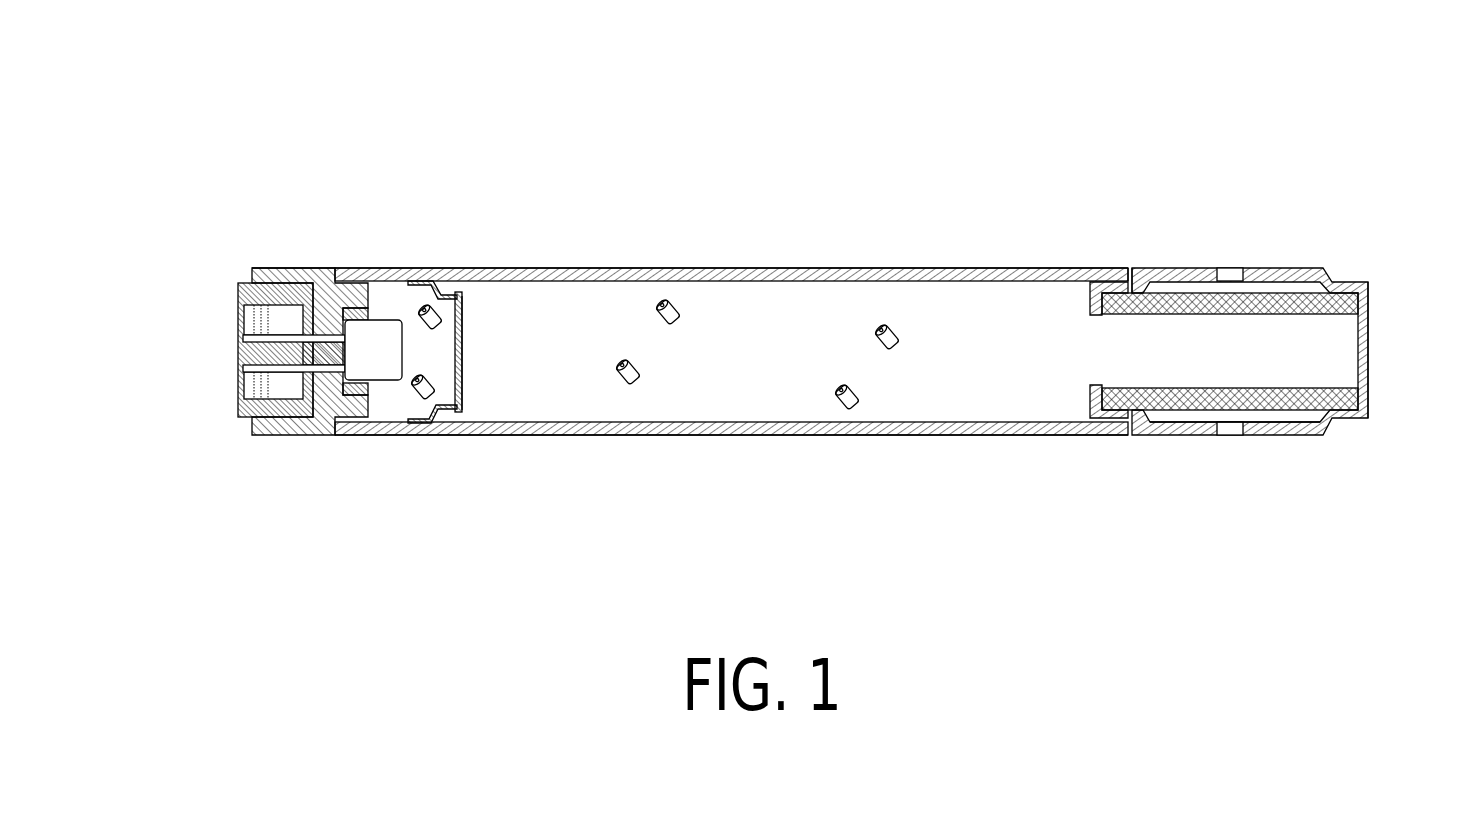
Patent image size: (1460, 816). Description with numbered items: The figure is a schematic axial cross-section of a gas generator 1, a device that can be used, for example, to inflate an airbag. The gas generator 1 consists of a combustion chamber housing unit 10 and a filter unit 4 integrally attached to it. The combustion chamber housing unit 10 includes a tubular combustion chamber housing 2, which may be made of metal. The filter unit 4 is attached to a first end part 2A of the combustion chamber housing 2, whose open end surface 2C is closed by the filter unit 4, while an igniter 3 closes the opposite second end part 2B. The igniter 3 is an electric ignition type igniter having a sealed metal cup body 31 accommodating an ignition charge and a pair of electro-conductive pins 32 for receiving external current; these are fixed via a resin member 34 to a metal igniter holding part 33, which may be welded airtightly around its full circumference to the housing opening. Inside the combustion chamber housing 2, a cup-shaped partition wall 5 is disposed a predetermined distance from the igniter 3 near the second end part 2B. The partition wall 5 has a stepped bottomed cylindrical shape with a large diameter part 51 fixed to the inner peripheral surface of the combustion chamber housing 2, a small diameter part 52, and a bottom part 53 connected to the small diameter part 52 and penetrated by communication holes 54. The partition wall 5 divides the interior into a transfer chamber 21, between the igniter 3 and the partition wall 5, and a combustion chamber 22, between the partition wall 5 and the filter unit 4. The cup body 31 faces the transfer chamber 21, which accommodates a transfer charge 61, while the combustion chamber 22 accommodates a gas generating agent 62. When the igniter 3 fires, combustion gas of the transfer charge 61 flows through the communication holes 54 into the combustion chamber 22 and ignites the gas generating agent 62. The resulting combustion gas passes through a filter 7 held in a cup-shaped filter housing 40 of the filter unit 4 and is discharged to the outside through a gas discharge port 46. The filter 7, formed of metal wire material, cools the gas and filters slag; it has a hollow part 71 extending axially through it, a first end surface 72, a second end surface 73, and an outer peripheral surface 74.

The gas generator 1 is at (245, 165).
The combustion chamber housing 2 is at (751, 265).
The first end part 2A is at (1121, 264).
The second end part 2B is at (345, 263).
The open end surface 2C is at (1131, 266).
The igniter 3 is at (238, 434).
The cup body 31 is at (350, 426).
The electro-conductive pins 32 is at (244, 338).
The igniter holding part 33 is at (243, 432).
The resin member 34 is at (240, 410).
The filter unit 4 is at (1289, 345).
The filter housing 40 is at (1179, 262).
The gas discharge port 46 is at (1230, 275).
The partition wall 5 is at (502, 270).
The large diameter part 51 is at (407, 297).
The small diameter part 52 is at (424, 284).
The bottom part 53 is at (470, 343).
The communication holes 54 is at (463, 320).
The transfer charge 61 is at (420, 393).
The gas generating agent 62 is at (626, 378).
The filter 7 is at (1278, 290).
The hollow part 71 is at (1211, 369).
The first end surface 72 is at (1368, 400).
The second end surface 73 is at (1092, 296).
The outer peripheral surface 74 is at (1180, 415).
The combustion chamber housing unit 10 is at (845, 253).
The transfer chamber 21 is at (413, 370).
The combustion chamber 22 is at (754, 369).